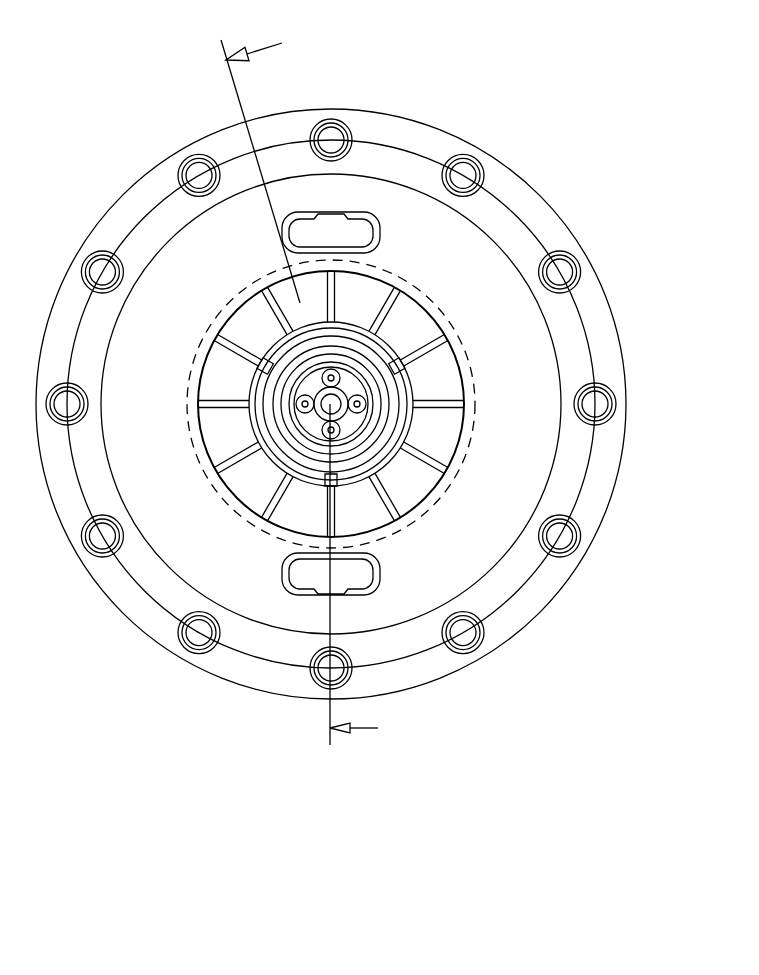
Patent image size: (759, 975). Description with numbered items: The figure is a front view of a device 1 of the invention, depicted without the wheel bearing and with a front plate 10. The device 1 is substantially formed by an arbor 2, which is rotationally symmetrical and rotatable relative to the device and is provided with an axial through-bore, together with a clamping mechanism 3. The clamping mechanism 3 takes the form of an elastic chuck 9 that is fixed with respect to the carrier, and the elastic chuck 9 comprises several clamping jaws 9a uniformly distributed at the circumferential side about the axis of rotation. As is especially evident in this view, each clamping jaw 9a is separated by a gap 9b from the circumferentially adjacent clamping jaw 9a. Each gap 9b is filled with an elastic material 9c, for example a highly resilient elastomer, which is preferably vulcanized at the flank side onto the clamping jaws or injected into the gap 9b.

The device 1 is at (640, 150).
The arbor 2 is at (350, 383).
The clamping mechanism 3 is at (457, 457).
The elastic chuck 9 is at (415, 500).
The clamping jaw 9a is at (213, 373).
The gap 9b is at (403, 365).
The elastic material 9c is at (442, 763).
The front plate 10 is at (490, 258).